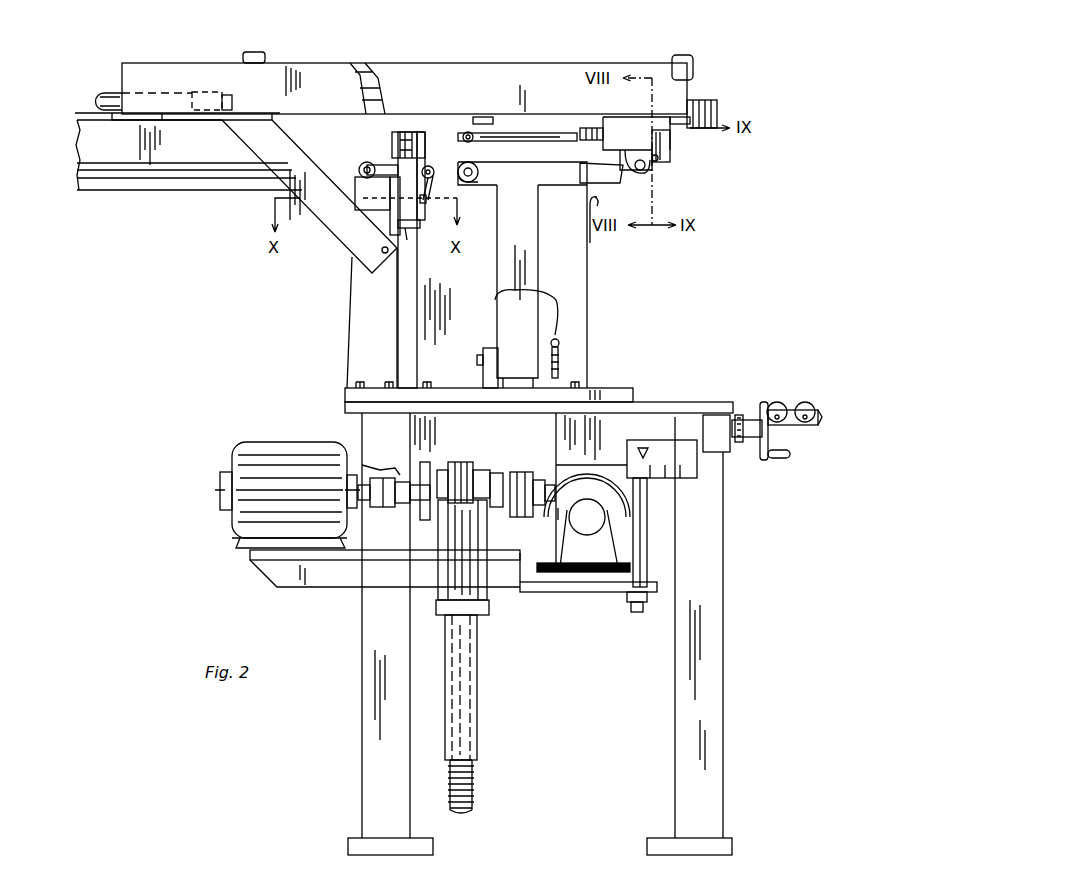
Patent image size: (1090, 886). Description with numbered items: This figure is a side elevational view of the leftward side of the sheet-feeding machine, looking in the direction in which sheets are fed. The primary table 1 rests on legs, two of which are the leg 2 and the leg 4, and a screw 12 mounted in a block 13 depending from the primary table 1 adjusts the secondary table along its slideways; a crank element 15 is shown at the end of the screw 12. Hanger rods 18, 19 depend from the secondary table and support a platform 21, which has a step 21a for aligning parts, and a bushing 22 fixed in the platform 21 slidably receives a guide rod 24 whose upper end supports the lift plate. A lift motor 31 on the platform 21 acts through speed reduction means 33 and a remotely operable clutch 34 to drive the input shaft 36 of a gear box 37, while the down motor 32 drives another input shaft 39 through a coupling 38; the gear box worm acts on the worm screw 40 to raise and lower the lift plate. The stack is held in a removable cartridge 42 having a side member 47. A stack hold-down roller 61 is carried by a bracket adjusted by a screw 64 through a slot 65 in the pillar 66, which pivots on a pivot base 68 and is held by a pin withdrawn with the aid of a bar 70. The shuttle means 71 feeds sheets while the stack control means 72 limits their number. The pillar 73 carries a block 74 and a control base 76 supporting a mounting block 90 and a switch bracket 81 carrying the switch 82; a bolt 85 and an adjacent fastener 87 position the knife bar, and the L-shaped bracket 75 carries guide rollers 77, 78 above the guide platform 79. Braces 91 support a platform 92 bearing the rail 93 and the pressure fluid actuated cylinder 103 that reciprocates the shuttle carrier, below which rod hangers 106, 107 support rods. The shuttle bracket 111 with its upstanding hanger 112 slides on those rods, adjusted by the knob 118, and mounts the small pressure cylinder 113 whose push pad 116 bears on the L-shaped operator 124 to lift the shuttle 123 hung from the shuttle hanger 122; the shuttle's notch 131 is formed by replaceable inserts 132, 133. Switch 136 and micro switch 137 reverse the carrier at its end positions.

The primary table 1 is at (630, 403).
The leg 2 is at (700, 678).
The leg 4 is at (360, 785).
The screw 12 is at (737, 440).
The block 13 is at (380, 283).
The hand crank 15 is at (764, 458).
The hanger rod 18 is at (642, 510).
The hanger rod 19 is at (402, 474).
The platform 21 is at (548, 592).
The step 21a is at (520, 588).
The bushing 22 is at (475, 598).
The guide rod 24 is at (460, 462).
The lift motor 31 is at (600, 525).
The down motor 32 is at (290, 455).
The speed reduction means 33 is at (560, 465).
The remotely operable clutch 34 is at (520, 500).
The input shaft 36 is at (518, 490).
The gear box 37 is at (497, 473).
The coupling 38 is at (388, 505).
The input shaft 39 is at (427, 470).
The worm screw 40 is at (477, 793).
The cartridge 42 is at (589, 289).
The side member 47 is at (445, 325).
The stack hold-down roller 61 is at (470, 182).
The screw 64 is at (462, 133).
The slot 65 is at (562, 134).
The pillar 66 is at (538, 243).
The pivot base 68 is at (486, 370).
The bar 70 is at (560, 350).
The shuttle means 71 is at (715, 174).
The stack control means 72 is at (377, 223).
The pillar 73 is at (350, 348).
The block 74 is at (390, 200).
The L-shaped bracket 75 is at (425, 200).
The control base 76 is at (420, 224).
The guide roller 77 is at (432, 166).
The guide roller 78 is at (365, 163).
The guide platform 79 is at (358, 172).
The switch bracket 81 is at (425, 150).
The switch 82 is at (395, 141).
The bolt 85 is at (400, 136).
The screw 87 is at (400, 152).
The mounting block 90 is at (412, 230).
The brace 91 is at (323, 207).
The platform 92 is at (112, 114).
The rail 93 is at (150, 63).
The pressure fluid actuated cylinder 103 is at (98, 93).
The rod hanger 106 is at (493, 120).
The rod hanger 107 is at (688, 125).
The shuttle bracket 111 is at (640, 130).
The upstanding hanger 112 is at (603, 120).
The small pressure cylinder 113 is at (595, 140).
The push pad 116 is at (660, 150).
The knob 118 is at (717, 112).
The shuttle hanger 122 is at (650, 178).
The shuttle 123 is at (585, 170).
The L-shaped operator 124 is at (660, 165).
The notch 131 is at (612, 218).
The replaceable insert 132 is at (585, 195).
The replaceable insert 133 is at (605, 180).
The switch 136 is at (690, 60).
The micro switch 137 is at (260, 50).